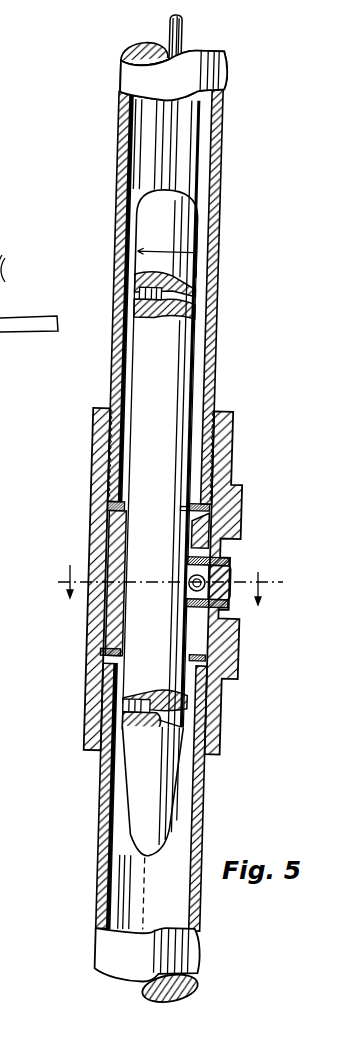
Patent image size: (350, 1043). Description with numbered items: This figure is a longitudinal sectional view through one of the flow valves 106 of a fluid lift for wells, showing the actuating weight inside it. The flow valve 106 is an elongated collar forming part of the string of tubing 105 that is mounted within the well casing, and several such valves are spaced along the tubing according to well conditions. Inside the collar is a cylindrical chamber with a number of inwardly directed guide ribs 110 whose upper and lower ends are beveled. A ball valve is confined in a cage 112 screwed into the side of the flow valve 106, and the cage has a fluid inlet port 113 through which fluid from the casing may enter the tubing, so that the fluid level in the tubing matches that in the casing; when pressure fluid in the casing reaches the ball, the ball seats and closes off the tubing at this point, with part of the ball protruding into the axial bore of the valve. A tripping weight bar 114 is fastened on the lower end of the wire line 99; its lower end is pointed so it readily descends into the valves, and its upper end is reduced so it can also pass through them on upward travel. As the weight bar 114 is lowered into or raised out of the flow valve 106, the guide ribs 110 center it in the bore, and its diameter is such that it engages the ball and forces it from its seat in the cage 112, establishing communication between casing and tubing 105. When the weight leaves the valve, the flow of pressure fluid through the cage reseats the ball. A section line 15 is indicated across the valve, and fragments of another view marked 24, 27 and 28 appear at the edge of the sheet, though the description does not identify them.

The wire line 99 is at (180, 36).
The string of tubing 105 is at (222, 200).
The flow valve 106 is at (104, 460).
The guide ribs 110 is at (200, 519).
The cage 112 is at (228, 604).
The fluid inlet port 113 is at (217, 585).
The tripping weight bar 114 is at (162, 406).
The section line 15 is at (174, 585).
The rod 24 is at (24, 322).
The ring 27 is at (5, 271).
The member 28 is at (12, 249).